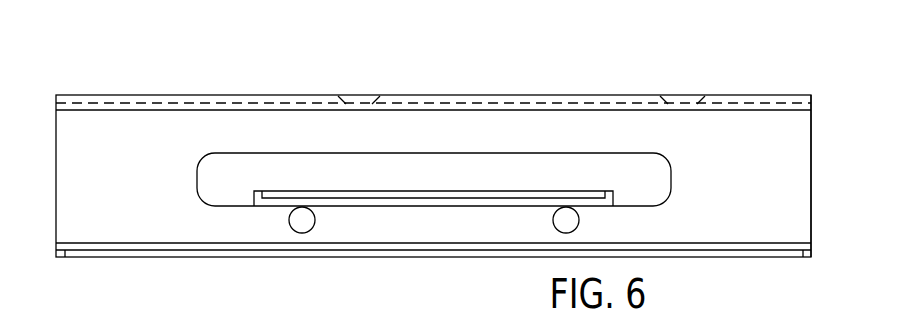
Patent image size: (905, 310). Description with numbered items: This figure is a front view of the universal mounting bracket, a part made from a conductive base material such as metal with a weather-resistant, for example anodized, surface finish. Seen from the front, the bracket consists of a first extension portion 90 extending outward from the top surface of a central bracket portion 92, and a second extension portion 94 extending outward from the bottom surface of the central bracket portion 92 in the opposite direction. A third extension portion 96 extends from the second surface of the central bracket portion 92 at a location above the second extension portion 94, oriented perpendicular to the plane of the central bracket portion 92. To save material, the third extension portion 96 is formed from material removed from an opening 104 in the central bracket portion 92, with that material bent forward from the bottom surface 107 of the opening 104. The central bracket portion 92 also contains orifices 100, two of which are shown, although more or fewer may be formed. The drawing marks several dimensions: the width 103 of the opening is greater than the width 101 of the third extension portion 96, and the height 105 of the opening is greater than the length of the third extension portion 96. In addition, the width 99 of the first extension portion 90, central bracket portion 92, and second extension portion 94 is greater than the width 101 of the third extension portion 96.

The first extension portion 90 is at (757, 97).
The central bracket portion 92 is at (797, 176).
The second extension portion 94 is at (728, 242).
The third extension portion 96 is at (507, 191).
The width of first extension portion, central bracket portion, and second extension 99 is at (56, 45).
The orifice 100 is at (295, 219).
The width of third extension portion 101 is at (613, 163).
The width of opening 103 is at (671, 126).
The opening 104 is at (215, 181).
The height of opening 105 is at (677, 153).
The bottom surface of the opening 107 is at (231, 213).